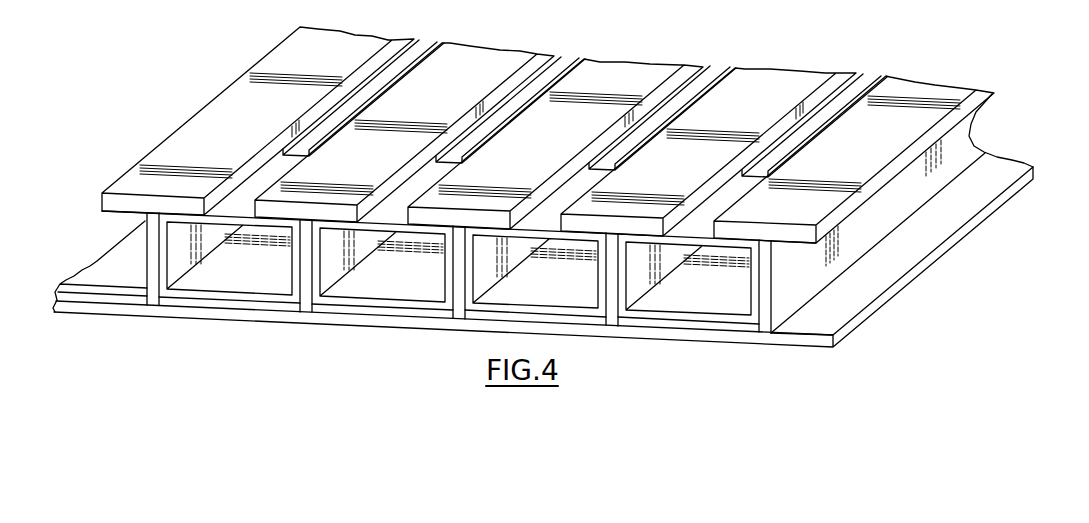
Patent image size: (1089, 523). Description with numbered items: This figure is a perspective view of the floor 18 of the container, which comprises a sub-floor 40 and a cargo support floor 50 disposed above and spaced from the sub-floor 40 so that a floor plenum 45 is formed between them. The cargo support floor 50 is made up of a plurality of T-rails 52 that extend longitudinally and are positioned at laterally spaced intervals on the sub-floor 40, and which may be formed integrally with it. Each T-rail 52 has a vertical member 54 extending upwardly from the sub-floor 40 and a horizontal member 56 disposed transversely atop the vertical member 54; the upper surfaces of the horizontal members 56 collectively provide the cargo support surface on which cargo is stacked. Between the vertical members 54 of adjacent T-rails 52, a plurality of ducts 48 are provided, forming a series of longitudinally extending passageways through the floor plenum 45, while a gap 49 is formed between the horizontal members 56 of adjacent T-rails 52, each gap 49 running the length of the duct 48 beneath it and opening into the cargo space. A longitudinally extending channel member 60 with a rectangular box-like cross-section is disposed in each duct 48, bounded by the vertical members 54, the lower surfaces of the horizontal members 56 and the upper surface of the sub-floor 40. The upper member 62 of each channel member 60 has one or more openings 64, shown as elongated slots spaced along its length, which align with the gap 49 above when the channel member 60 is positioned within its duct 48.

The floor 18 is at (543, 194).
The sub-floor 40 is at (857, 320).
The floor plenum 45 is at (817, 279).
The duct 48 is at (419, 284).
The gap 49 is at (268, 172).
The cargo support floor 50 is at (788, 84).
The T-rail 52 is at (842, 233).
The vertical member 54 is at (772, 293).
The horizontal member 56 is at (908, 155).
The channel member 60 is at (320, 263).
The upper member 62 is at (223, 222).
The opening 64 is at (424, 48).